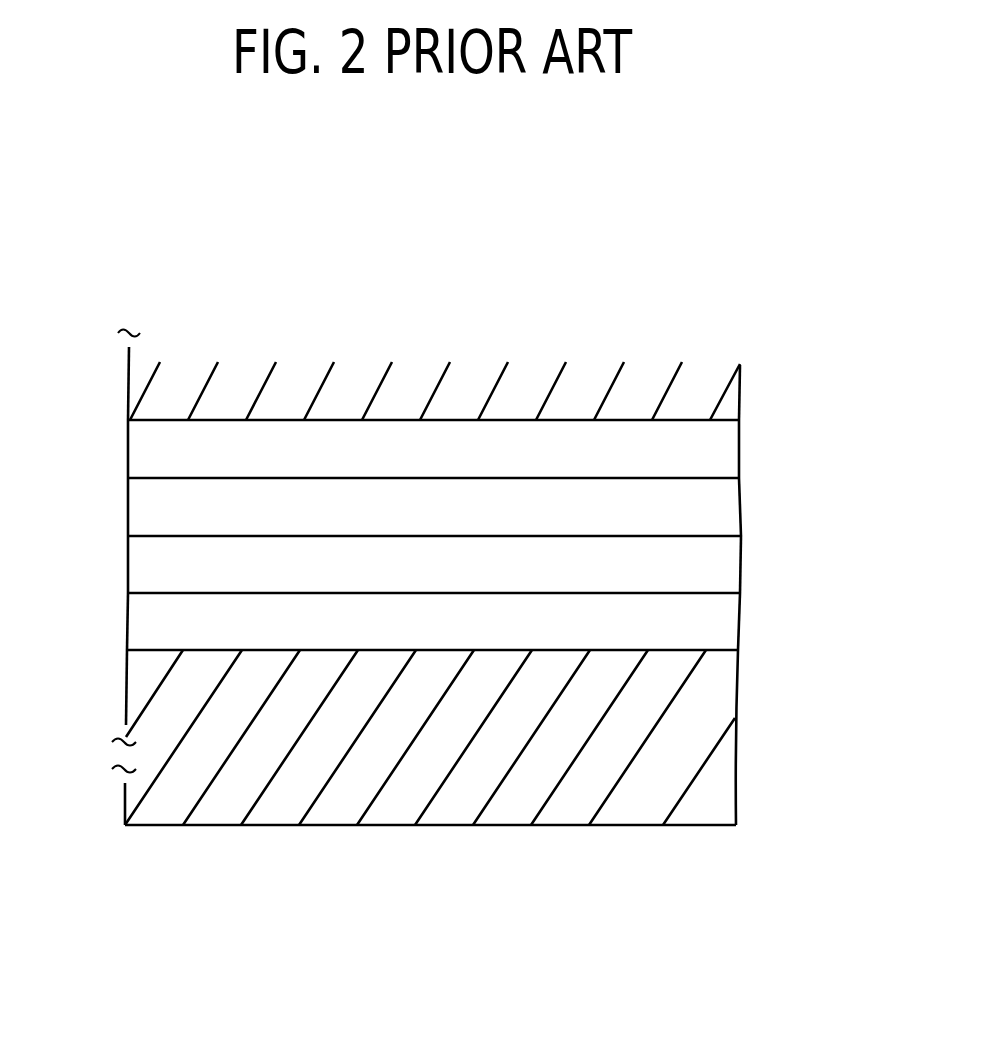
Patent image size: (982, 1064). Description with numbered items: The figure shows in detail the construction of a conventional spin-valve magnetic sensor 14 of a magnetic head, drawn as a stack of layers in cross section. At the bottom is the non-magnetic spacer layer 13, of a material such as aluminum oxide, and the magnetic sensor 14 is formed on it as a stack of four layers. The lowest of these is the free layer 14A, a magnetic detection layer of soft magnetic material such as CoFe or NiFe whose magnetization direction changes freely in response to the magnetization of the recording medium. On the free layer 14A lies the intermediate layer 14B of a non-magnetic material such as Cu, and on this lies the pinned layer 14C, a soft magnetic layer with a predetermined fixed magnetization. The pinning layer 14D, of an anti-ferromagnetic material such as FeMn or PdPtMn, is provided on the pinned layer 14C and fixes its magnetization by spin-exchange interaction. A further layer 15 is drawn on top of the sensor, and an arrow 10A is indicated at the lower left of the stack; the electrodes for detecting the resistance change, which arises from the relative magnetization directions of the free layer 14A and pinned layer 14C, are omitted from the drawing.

The substrate surface 10A is at (122, 837).
The spacer layer 13 is at (722, 749).
The magnetic sensor 14 is at (454, 424).
The free layer 14A is at (716, 636).
The intermediate layer 14B is at (722, 576).
The pinned layer 14C is at (724, 511).
The pinning layer 14D is at (723, 453).
The protective layer 15 is at (745, 384).